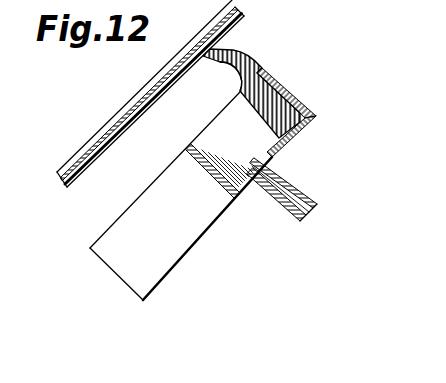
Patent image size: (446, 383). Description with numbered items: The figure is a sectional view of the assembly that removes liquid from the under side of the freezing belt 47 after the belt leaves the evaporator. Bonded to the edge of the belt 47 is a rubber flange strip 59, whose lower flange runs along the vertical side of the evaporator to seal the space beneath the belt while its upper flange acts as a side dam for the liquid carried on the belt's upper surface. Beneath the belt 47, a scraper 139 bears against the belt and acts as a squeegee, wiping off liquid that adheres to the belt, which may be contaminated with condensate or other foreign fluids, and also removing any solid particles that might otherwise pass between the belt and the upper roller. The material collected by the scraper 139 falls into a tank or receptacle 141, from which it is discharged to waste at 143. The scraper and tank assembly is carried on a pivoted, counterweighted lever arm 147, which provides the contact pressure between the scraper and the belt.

The rubber flange strip 59 is at (120, 110).
The belt 47 is at (134, 108).
The scraper 139 is at (220, 62).
The tank or receptacle 141 is at (297, 93).
The waste discharge 143 is at (295, 183).
The lever arm 147 is at (191, 248).